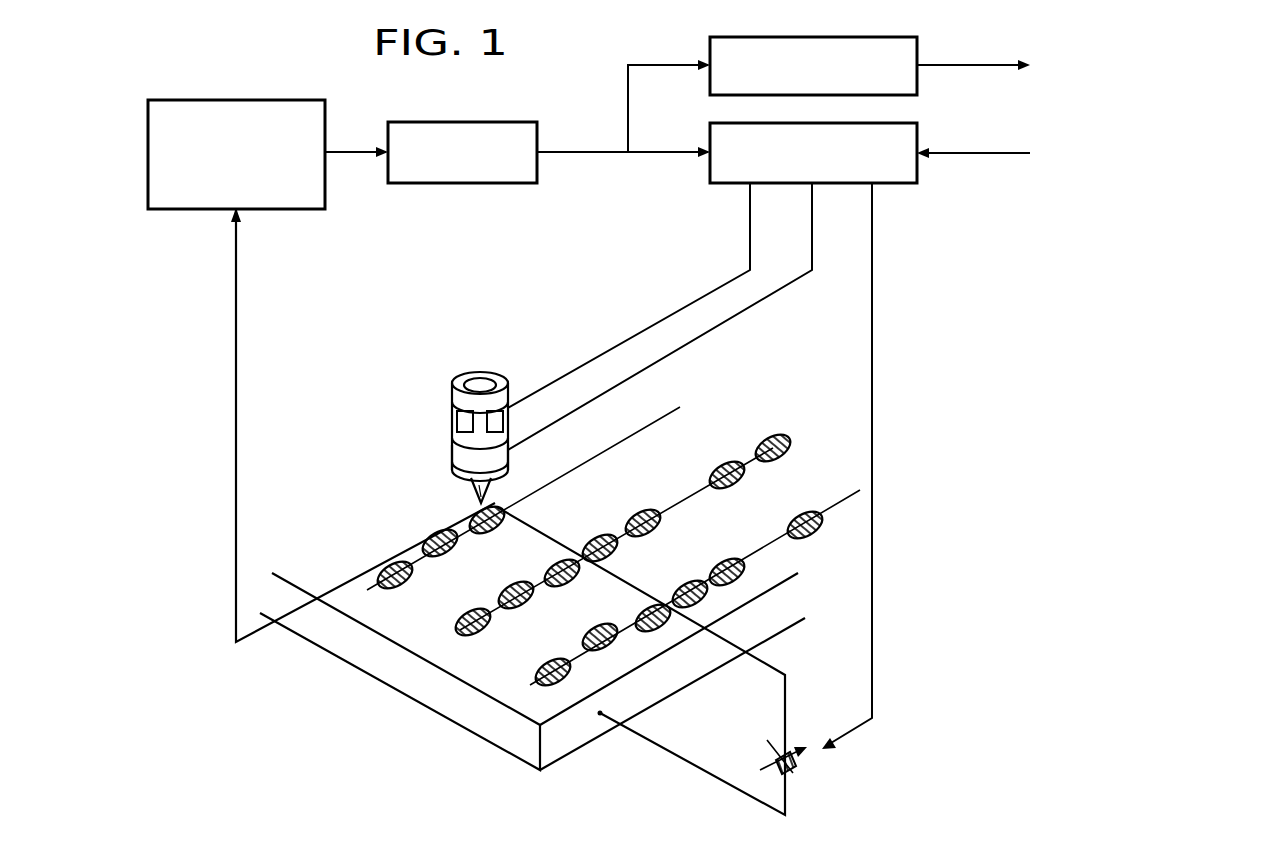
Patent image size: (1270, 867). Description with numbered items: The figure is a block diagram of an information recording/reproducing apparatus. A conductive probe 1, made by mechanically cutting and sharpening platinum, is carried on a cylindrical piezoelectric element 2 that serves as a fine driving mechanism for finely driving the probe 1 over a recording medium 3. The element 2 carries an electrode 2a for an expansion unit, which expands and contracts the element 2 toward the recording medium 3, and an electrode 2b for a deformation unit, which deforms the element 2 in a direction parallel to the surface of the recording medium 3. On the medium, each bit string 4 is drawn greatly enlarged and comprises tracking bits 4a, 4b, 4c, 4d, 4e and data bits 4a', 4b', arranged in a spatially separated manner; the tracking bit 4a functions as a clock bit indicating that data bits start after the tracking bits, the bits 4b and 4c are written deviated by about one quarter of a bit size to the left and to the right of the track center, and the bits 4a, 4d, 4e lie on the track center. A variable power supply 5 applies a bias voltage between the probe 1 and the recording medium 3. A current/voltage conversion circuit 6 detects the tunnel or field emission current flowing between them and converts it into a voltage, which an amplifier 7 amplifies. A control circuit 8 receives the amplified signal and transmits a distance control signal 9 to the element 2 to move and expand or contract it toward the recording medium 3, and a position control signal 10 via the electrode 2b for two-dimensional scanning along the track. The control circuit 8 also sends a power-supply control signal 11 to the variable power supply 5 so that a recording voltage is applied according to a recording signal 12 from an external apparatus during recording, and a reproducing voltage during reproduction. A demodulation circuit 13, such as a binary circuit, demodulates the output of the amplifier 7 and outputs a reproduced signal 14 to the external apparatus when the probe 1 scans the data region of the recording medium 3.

The conductive probe 1 is at (470, 488).
The cylindrical piezoelectric element 2 is at (489, 403).
The electrode for expansion unit 2a is at (504, 450).
The electrode for deformation unit 2b is at (498, 418).
The recording medium 3 is at (408, 688).
The bit string 4 is at (400, 626).
The tracking bit 4a is at (473, 600).
The tracking bit 4b is at (525, 610).
The tracking bit 4c is at (569, 582).
The tracking bit 4d is at (610, 555).
The tracking bit 4e is at (657, 530).
The data bit 4a' is at (739, 491).
The data bit 4b' is at (790, 465).
The variable power supply 5 is at (797, 766).
The current/voltage conversion circuit 6 is at (236, 139).
The amplifier 7 is at (462, 139).
The control circuit 8 is at (801, 145).
The distance control signal 9 is at (673, 353).
The position control signal 10 is at (613, 350).
The power-supply control signal 11 is at (873, 233).
The recording signal 12 is at (1047, 166).
The demodulation circuit 13 is at (811, 50).
The reproduced signal 14 is at (1058, 76).